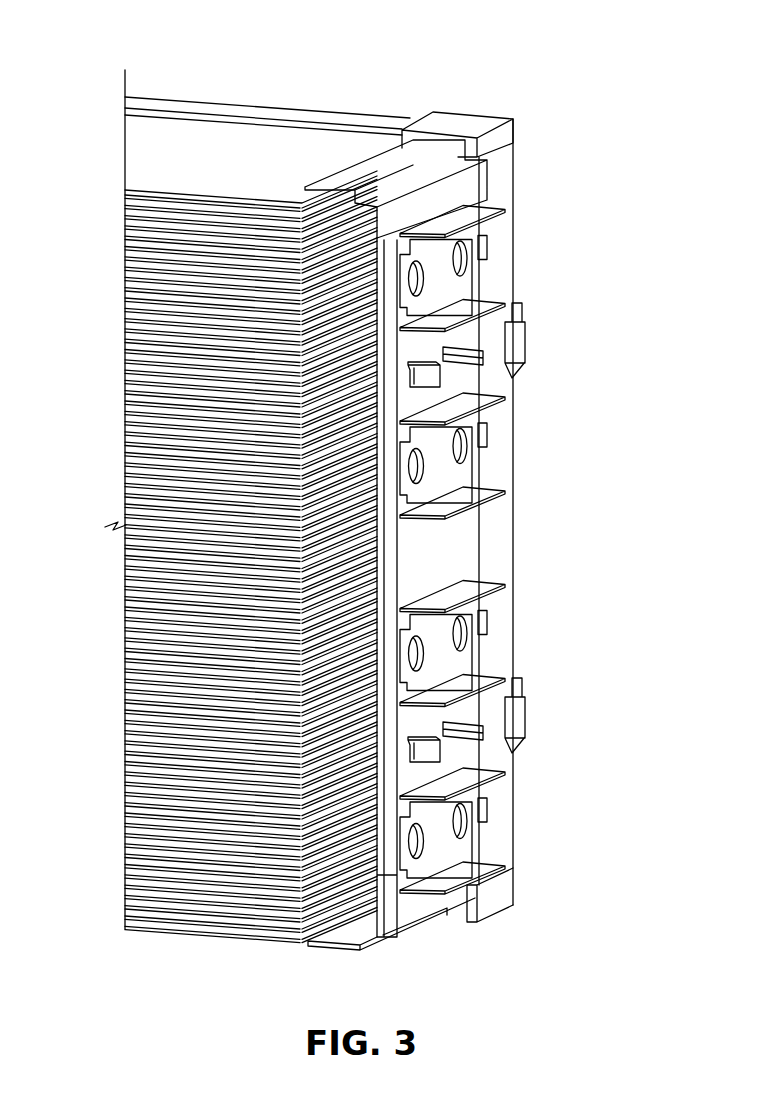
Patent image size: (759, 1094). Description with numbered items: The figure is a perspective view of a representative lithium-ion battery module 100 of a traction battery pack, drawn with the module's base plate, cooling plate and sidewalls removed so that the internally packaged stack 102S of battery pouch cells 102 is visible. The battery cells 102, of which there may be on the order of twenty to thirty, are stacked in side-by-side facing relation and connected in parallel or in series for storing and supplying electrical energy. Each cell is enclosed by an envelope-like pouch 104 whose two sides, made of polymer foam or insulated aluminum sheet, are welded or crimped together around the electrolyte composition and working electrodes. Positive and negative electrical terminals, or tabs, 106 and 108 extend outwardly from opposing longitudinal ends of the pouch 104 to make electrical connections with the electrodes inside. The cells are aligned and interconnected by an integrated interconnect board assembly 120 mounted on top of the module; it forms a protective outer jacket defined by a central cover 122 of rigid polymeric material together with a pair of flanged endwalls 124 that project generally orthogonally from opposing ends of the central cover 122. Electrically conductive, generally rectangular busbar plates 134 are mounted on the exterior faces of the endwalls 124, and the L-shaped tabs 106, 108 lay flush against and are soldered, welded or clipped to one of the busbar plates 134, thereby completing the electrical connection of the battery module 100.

The battery module 100 is at (599, 71).
The battery cells 102 is at (125, 207).
The stack 102S is at (176, 120).
The pouch 104 is at (341, 148).
The positive electrical terminal 106 is at (503, 207).
The negative electrical terminal 108 is at (519, 318).
The integrated interconnect board assembly 120 is at (420, 107).
The central cover 122 is at (246, 115).
The flanged endwalls 124 is at (484, 123).
The busbar plates 134 is at (463, 281).